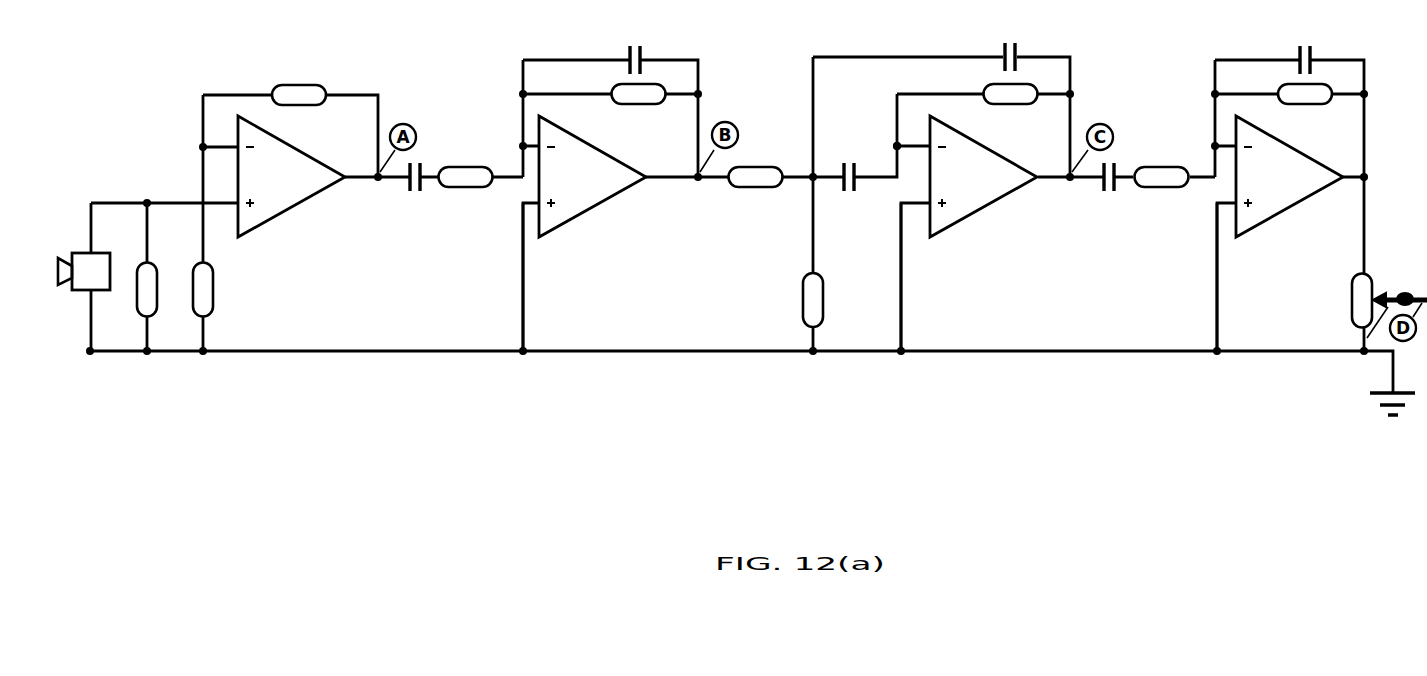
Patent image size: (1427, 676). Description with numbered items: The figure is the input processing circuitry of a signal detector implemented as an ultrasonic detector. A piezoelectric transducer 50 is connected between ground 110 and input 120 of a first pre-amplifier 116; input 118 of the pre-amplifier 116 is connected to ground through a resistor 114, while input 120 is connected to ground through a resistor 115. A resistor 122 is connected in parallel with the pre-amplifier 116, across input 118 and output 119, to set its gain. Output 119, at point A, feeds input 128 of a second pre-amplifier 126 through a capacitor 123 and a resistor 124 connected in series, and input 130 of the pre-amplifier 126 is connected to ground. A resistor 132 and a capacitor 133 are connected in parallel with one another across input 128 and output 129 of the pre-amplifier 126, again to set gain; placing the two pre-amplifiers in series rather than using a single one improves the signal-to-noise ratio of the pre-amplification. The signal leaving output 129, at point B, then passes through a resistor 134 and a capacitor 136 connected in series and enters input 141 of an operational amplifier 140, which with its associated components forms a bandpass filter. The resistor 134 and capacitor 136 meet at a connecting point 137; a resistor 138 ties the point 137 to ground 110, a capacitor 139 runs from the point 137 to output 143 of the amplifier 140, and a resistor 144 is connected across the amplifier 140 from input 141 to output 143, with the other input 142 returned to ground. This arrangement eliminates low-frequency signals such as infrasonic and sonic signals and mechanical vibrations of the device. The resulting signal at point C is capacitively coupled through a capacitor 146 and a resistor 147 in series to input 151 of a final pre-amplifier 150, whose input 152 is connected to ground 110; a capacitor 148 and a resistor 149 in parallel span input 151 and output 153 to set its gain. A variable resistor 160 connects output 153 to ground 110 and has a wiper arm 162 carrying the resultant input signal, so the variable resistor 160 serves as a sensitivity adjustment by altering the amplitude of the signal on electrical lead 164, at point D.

The piezoelectric transducer 50 is at (83, 292).
The ground 110 is at (1391, 375).
The resistor 114 is at (215, 293).
The resistor 115 is at (158, 291).
The first pre-amplifier 116 is at (293, 210).
The input of pre-amplifier 116 118 is at (202, 160).
The output of pre-amplifier 116 119 is at (365, 180).
The input of pre-amplifier 116 120 is at (147, 200).
The resistor 122 is at (299, 85).
The capacitor 123 is at (413, 197).
The resistor 124 is at (470, 187).
The second pre-amplifier 126 is at (590, 208).
The input of pre-amplifier 126 128 is at (523, 147).
The output of pre-amplifier 126 129 is at (657, 179).
The input of pre-amplifier 126 130 is at (522, 229).
The resistor 132 is at (632, 107).
The capacitor 133 is at (644, 54).
The resistor 134 is at (767, 188).
The capacitor 136 is at (843, 195).
The connecting point 137 is at (809, 172).
The resistor 138 is at (823, 293).
The capacitor 139 is at (1017, 53).
The operational amplifier 140 is at (983, 208).
The input of operational amplifier 140 141 is at (897, 147).
The non-inverting input line 142 is at (897, 233).
The output of pre-amplifier 140 143 is at (1043, 179).
The resistor 144 is at (1013, 106).
The capacitor 146 is at (1105, 193).
The resistor 147 is at (1170, 190).
The capacitor 148 is at (1312, 52).
The resistor 149 is at (1303, 107).
The final pre-amplifier 150 is at (1290, 210).
The input of pre-amplifier 150 151 is at (1215, 147).
The input of pre-amplifier 150 152 is at (1217, 235).
The output of pre-amplifier 150 153 is at (1366, 175).
The variable resistor 160 is at (1368, 273).
The wiper arm 162 is at (1374, 299).
The electrical lead 164 is at (1367, 338).